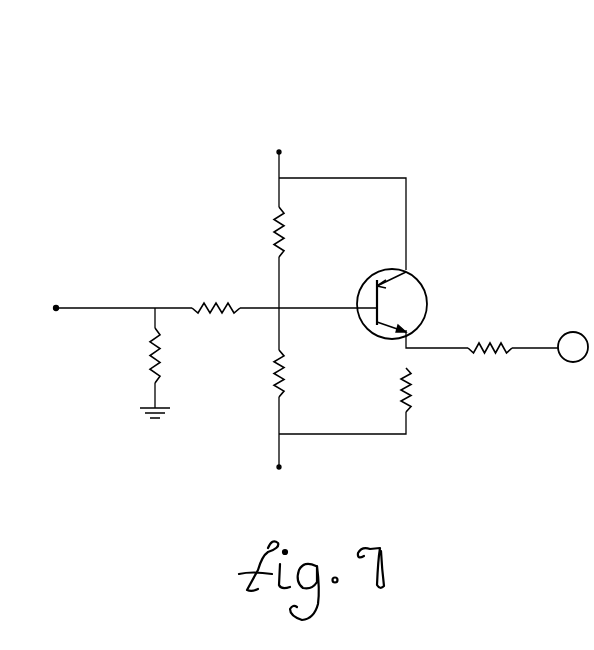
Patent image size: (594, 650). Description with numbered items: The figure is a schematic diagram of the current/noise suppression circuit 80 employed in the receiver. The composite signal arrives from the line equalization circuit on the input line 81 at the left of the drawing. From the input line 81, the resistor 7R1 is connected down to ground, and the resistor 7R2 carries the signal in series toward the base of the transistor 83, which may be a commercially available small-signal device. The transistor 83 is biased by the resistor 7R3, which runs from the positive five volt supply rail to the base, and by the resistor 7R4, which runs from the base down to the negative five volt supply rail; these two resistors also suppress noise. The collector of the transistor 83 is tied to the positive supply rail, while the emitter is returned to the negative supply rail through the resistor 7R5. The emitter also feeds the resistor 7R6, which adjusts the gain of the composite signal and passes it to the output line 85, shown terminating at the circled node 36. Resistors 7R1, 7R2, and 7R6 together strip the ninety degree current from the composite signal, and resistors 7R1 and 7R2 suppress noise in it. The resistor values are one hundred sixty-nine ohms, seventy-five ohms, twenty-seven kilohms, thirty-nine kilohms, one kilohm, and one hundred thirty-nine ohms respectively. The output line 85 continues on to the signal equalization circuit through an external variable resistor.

The current/noise suppression circuit 80 is at (372, 100).
The input line 81 is at (90, 308).
The transistor 83 is at (415, 278).
The output line 85 is at (536, 347).
The output terminal 36 is at (573, 347).
The resistor 7R1 is at (129, 355).
The resistor 7R2 is at (218, 323).
The resistor 7R3 is at (249, 232).
The resistor 7R4 is at (255, 373).
The resistor 7R5 is at (433, 390).
The resistor 7R6 is at (489, 332).